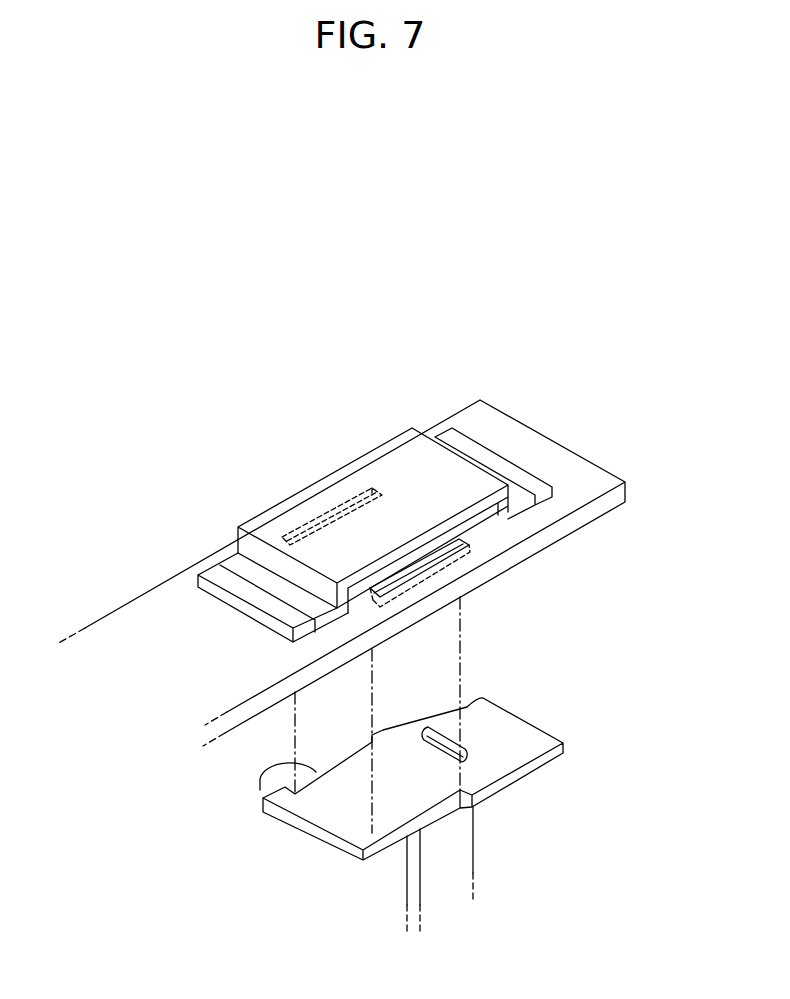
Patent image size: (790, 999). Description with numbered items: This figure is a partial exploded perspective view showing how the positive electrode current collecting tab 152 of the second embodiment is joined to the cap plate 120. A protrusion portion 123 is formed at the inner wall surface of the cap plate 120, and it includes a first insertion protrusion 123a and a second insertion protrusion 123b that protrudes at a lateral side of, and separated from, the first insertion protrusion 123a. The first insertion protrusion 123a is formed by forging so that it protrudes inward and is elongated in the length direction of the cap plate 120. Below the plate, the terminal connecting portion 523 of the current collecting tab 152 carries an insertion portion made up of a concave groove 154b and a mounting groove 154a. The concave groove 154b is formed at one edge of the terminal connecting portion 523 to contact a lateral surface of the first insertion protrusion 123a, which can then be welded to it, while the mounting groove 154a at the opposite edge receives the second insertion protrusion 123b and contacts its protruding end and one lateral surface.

The cap plate 120 is at (550, 426).
The protrusion portion 123 is at (353, 398).
The first insertion protrusion 123a is at (408, 567).
The second insertion protrusion 123b is at (318, 515).
The positive electrode current collecting tab 152 is at (486, 853).
The mounting groove 154a is at (258, 786).
The concave groove 154b is at (428, 813).
The terminal connecting portion 523 is at (344, 880).